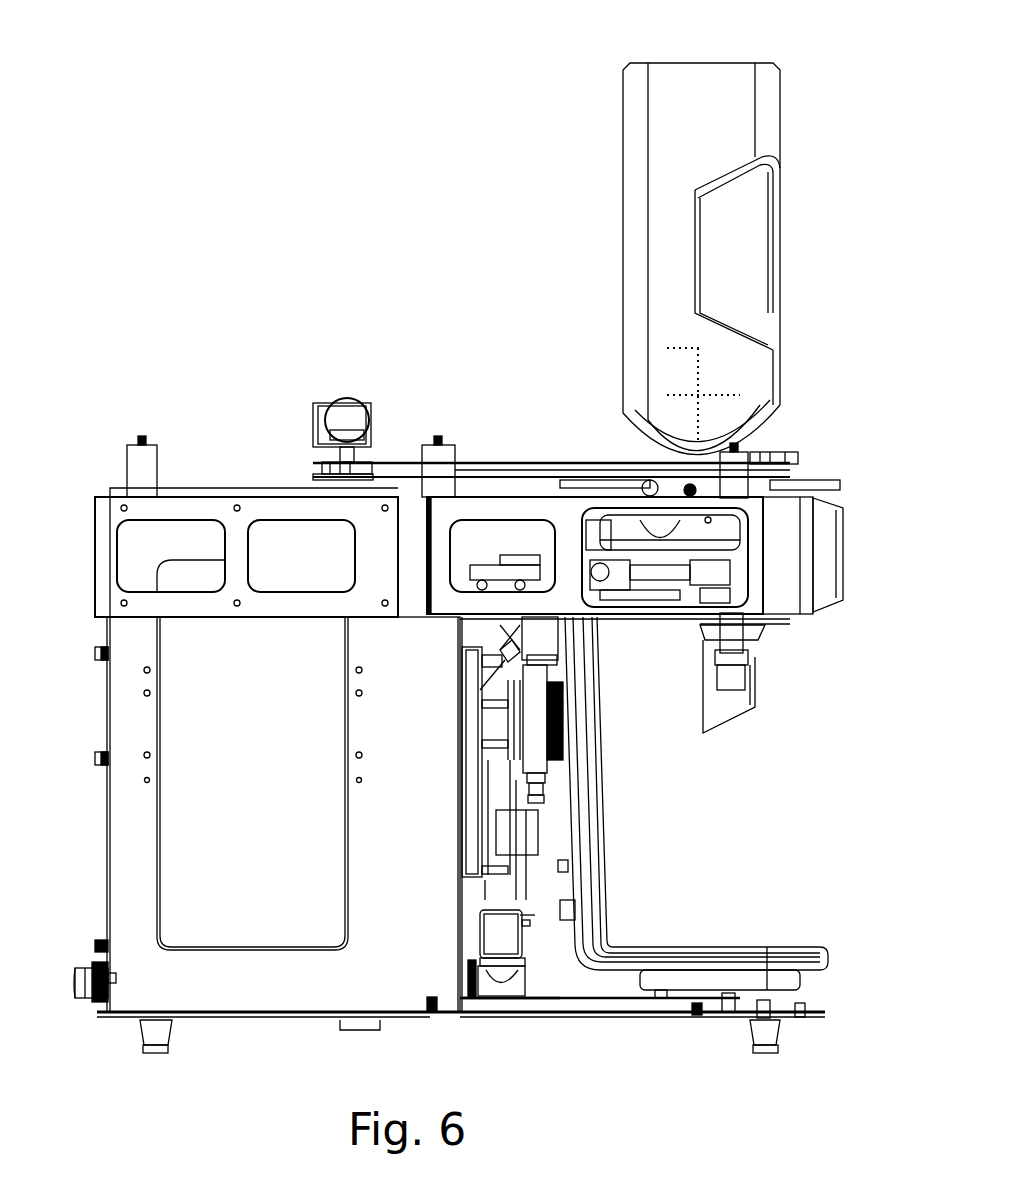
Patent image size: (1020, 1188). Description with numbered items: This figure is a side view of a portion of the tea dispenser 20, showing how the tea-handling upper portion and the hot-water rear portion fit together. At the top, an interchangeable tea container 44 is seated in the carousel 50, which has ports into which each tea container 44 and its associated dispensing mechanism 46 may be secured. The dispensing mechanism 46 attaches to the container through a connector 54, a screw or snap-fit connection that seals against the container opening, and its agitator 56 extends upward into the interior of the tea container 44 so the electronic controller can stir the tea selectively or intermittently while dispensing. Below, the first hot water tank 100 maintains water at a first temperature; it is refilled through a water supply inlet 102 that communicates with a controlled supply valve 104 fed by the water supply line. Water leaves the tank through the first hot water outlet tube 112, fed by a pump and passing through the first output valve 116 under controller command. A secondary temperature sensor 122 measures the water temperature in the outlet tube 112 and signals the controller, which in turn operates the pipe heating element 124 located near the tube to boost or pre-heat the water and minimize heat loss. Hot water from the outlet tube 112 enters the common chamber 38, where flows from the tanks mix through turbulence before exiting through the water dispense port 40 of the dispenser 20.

The tea dispenser 20 is at (186, 86).
The tea container 44 is at (660, 103).
The agitator 56 is at (720, 372).
The carousel 50 is at (527, 473).
The connector 54 is at (690, 492).
The secondary temperature sensor 122 is at (512, 640).
The dispensing mechanism 46 is at (730, 525).
The common chamber 38 is at (725, 573).
The water dispense port 40 is at (730, 648).
The pipe heating element 124 is at (562, 722).
The first hot water tank 100 is at (227, 826).
The water supply inlet 102 is at (470, 1005).
The controlled supply valve 104 is at (503, 1000).
The first output valve 116 is at (510, 942).
The first hot water outlet tube 112 is at (540, 763).